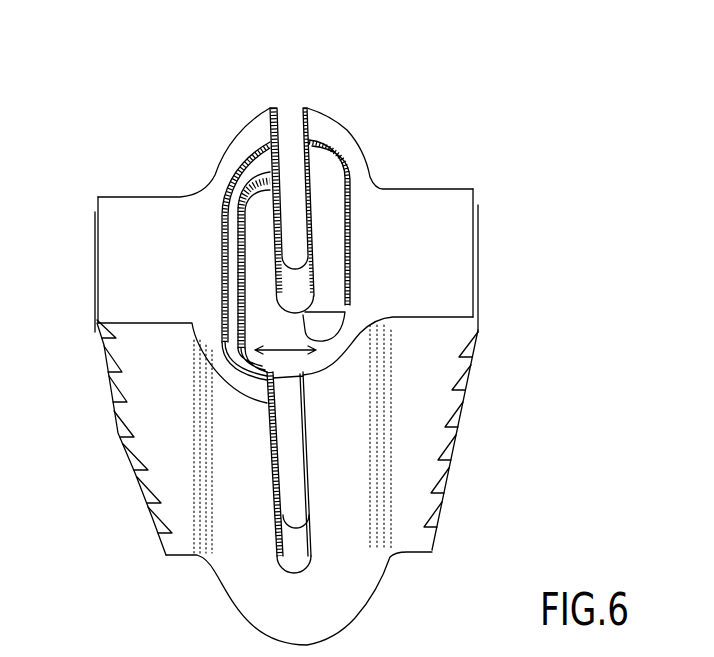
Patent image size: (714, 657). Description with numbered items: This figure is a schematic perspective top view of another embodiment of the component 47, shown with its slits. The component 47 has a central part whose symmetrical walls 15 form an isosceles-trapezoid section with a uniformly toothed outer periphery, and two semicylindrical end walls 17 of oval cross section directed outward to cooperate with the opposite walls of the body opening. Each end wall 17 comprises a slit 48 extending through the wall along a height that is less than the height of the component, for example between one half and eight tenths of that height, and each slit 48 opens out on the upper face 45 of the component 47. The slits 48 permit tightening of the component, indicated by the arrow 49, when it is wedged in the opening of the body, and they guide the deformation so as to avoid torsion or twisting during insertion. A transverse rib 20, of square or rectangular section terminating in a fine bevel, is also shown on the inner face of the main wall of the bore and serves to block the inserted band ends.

The walls 15 is at (152, 385).
The end walls 17 is at (317, 130).
The transverse rib 20 is at (229, 236).
The upper face 45 is at (229, 149).
The component 47 is at (501, 199).
The slit 48 is at (292, 107).
The arrow 49 is at (313, 385).